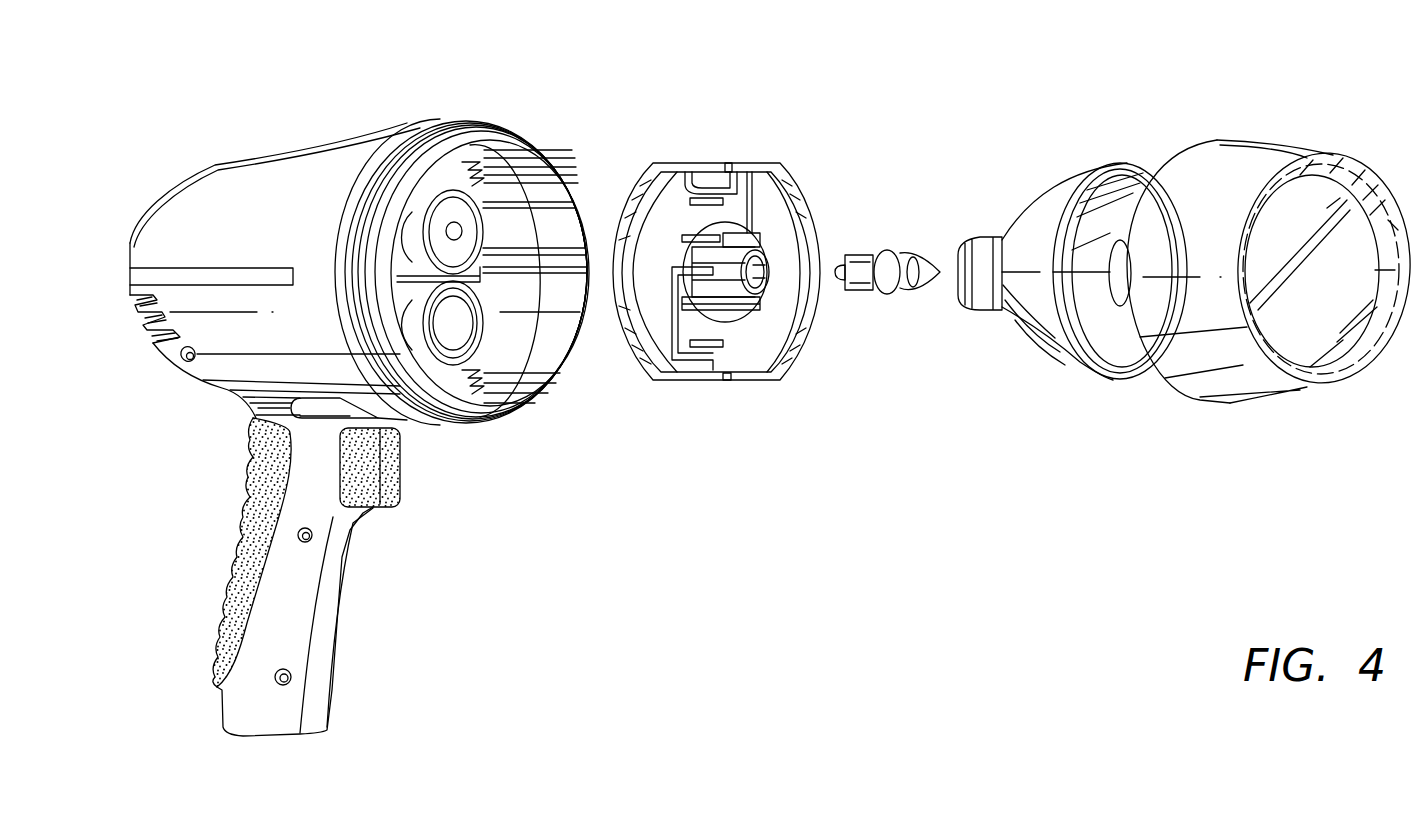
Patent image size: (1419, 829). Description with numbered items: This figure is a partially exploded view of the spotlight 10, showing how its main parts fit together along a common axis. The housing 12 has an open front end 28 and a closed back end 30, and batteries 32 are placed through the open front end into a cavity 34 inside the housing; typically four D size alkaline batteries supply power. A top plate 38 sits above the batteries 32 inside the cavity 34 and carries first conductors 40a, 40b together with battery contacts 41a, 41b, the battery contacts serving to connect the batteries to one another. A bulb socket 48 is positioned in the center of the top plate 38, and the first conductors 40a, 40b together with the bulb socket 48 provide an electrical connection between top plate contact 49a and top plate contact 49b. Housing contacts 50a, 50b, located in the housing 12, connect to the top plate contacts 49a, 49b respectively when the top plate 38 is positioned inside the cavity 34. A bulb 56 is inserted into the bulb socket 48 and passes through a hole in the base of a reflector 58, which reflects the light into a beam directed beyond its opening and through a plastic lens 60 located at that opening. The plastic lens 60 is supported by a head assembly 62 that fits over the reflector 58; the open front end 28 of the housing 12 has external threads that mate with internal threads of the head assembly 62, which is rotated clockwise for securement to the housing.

The spotlight 10 is at (188, 113).
The housing 12 is at (258, 164).
The open front end 28 is at (508, 148).
The closed back end 30 is at (142, 222).
The batteries 32 is at (455, 340).
The cavity 34 is at (512, 315).
The top plate 38 is at (647, 182).
The first conductor 40a is at (693, 185).
The first conductor 40b is at (672, 283).
The battery contact 41a is at (690, 218).
The battery contact 41b is at (730, 345).
The bulb socket 48 is at (770, 275).
The top plate contact 49a is at (728, 163).
The top plate contact 49b is at (730, 380).
The housing contact 50a is at (458, 188).
The housing contact 50b is at (472, 400).
The bulb 56 is at (865, 262).
The reflector 58 is at (1033, 207).
The plastic lens 60 is at (1297, 322).
The head assembly 62 is at (1265, 140).